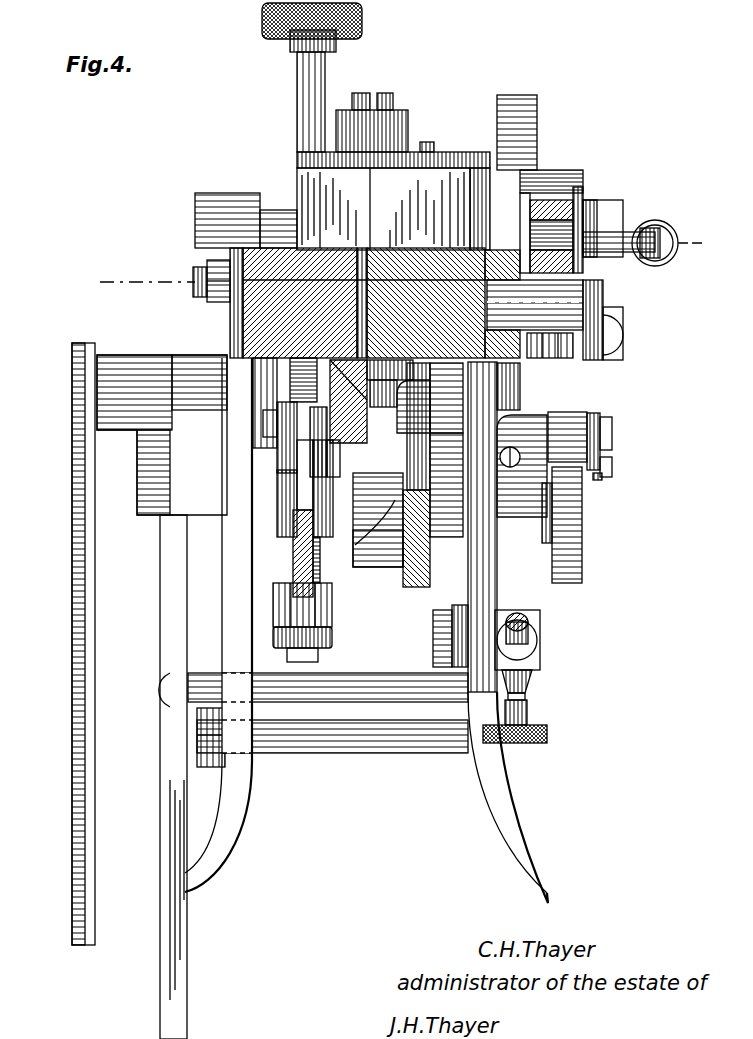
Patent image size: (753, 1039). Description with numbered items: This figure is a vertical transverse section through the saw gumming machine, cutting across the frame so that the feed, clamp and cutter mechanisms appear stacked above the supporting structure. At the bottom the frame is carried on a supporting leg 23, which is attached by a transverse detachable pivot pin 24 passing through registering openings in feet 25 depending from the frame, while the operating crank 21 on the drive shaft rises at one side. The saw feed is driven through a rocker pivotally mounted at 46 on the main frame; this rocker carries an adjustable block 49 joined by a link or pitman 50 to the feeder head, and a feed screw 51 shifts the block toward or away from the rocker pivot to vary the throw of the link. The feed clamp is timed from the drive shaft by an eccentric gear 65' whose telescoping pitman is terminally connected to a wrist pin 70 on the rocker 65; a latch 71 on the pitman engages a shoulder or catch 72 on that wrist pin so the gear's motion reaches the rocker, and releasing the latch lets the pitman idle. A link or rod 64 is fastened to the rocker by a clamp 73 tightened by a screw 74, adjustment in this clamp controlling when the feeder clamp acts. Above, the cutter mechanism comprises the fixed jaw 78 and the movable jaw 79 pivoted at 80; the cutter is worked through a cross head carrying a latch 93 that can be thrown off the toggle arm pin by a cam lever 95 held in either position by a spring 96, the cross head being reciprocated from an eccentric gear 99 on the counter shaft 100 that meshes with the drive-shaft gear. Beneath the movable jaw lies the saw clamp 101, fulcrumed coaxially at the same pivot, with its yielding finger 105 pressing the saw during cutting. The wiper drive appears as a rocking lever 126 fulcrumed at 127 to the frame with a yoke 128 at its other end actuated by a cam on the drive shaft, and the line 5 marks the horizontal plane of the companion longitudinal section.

The section line 5— 5 is at (399, 267).
The operating crank 21 is at (78, 735).
The supporting leg 23 is at (185, 930).
The pivot pin 24 is at (378, 692).
The feet 25 is at (243, 800).
The rocker pivot 46 is at (202, 268).
The adjustable block 49 is at (287, 447).
The link or pitman 50 is at (293, 557).
The feed screw 51 is at (290, 377).
The link or rod 64 is at (537, 622).
The rocker 65 is at (546, 527).
The eccentric gear 65' is at (555, 440).
The wrist pin 70 is at (617, 428).
The latch 71 is at (580, 563).
The shoulder or catch 72 is at (602, 480).
The clamp 73 is at (542, 657).
The screw 74 is at (537, 725).
The fixed jaw 78 is at (381, 303).
The movable jaw 79 is at (228, 309).
The pivot mounting 80 is at (386, 102).
The latch 93 is at (573, 195).
The cam lever 95 is at (649, 228).
The spring 96 is at (476, 243).
The eccentric gear 99 is at (540, 104).
The counter shaft 100 is at (263, 205).
The saw clamp 101 is at (371, 402).
The yielding finger 105 is at (395, 427).
The rocking lever 126 is at (417, 585).
The fulcrum 127 is at (393, 510).
The yoke 128 is at (387, 552).